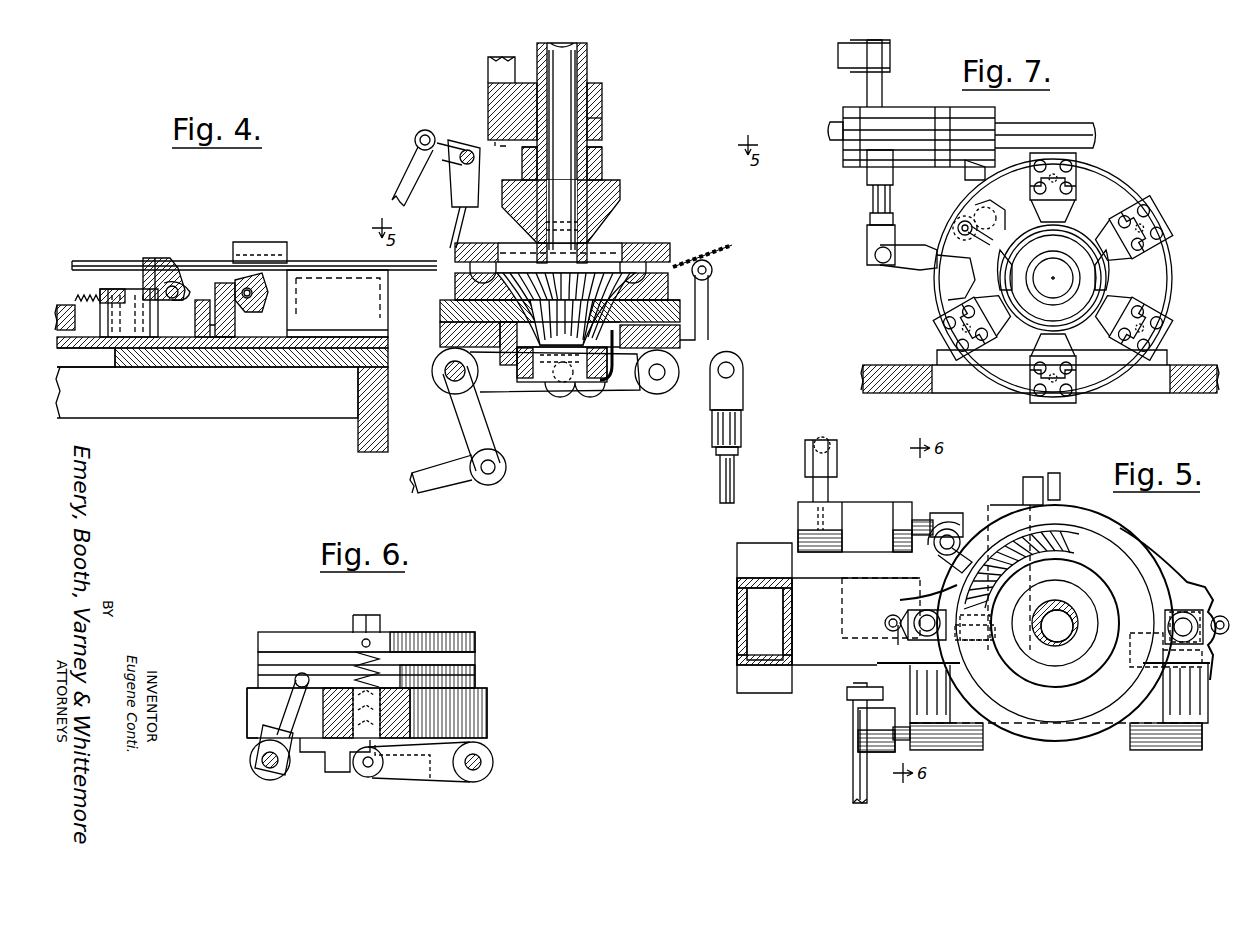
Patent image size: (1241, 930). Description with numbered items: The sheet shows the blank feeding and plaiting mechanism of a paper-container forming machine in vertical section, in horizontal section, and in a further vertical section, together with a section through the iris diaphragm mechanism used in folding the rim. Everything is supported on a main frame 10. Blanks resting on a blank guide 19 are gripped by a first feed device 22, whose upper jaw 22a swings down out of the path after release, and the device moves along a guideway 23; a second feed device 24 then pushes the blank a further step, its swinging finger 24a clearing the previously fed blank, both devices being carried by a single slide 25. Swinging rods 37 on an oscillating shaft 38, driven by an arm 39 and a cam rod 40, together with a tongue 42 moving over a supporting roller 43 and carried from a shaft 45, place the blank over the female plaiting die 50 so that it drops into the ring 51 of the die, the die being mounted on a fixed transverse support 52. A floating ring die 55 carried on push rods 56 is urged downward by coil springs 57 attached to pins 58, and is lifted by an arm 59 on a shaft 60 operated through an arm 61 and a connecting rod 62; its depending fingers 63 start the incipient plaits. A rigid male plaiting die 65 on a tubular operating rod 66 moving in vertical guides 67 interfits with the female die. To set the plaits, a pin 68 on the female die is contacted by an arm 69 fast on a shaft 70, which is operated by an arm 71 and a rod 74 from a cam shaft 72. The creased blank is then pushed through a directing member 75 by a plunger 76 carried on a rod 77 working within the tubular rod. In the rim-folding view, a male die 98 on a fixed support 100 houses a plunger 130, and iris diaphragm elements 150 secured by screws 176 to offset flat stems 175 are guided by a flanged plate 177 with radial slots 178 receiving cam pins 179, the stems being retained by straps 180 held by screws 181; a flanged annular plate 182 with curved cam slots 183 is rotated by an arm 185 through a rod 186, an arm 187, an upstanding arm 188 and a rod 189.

In FIG. 4, the main frame 10 is at (358, 450).
In FIG. 5, the main frame 10 is at (737, 637).
In FIG. 4, the blank guide 19 is at (105, 258).
In FIG. 4, the first feed device 22 is at (183, 266).
In FIG. 4, the upper jaw 22a is at (155, 256).
In FIG. 4, the guideway 23 is at (287, 352).
In FIG. 4, the second feed device 24 is at (222, 283).
In FIG. 4, the swinging finger 24a is at (262, 272).
In FIG. 4, the slide 25 is at (176, 360).
In FIG. 4, the swinging rods 37 is at (452, 232).
In FIG. 4, the oscillating shaft 38 is at (466, 148).
In FIG. 4, the arm 39 is at (438, 132).
In FIG. 4, the cam rod 40 is at (400, 175).
In FIG. 4, the tongue 42 is at (732, 250).
In FIG. 4, the supporting roller 43 is at (713, 270).
In FIG. 5, the shaft 45 is at (1060, 488).
In FIG. 4, the female plaiting die 50 is at (680, 305).
In FIG. 5, the female plaiting die 50 is at (1050, 555).
In FIG. 6, the female plaiting die 50 is at (475, 680).
In FIG. 4, the ring 51 is at (670, 280).
In FIG. 5, the ring 51 is at (1078, 527).
In FIG. 6, the ring 51 is at (475, 665).
In FIG. 4, the transverse support 52 is at (680, 330).
In FIG. 5, the transverse support 52 is at (845, 660).
In FIG. 6, the transverse support 52 is at (487, 725).
In FIG. 4, the floating ring die 55 is at (650, 243).
In FIG. 5, the floating ring die 55 is at (1125, 560).
In FIG. 6, the floating ring die 55 is at (475, 638).
In FIG. 4, the push rods 56 is at (613, 258).
In FIG. 5, the push rods 56 is at (945, 620).
In FIG. 6, the push rods 56 is at (353, 648).
In FIG. 5, the coil springs 57 is at (893, 615).
In FIG. 6, the coil springs 57 is at (380, 665).
In FIG. 5, the pins 58 is at (910, 635).
In FIG. 6, the pins 58 is at (370, 640).
In FIG. 4, the arm 59 is at (510, 380).
In FIG. 5, the arm 59 is at (960, 672).
In FIG. 6, the arm 59 is at (450, 775).
In FIG. 4, the shaft 60 is at (480, 400).
In FIG. 5, the shaft 60 is at (993, 745).
In FIG. 6, the shaft 60 is at (493, 762).
In FIG. 4, the arm 61 is at (500, 452).
In FIG. 5, the arm 61 is at (865, 700).
In FIG. 4, the connecting rod 62 is at (470, 482).
In FIG. 5, the connecting rod 62 is at (853, 770).
In FIG. 4, the depending fingers 63 is at (670, 253).
In FIG. 4, the male plaiting die 65 is at (620, 192).
In FIG. 5, the male plaiting die 65 is at (1095, 585).
In FIG. 4, the tubular operating rod 66 is at (588, 72).
In FIG. 5, the tubular operating rod 66 is at (1068, 635).
In FIG. 4, the vertical guides 67 is at (602, 108).
In FIG. 5, the pin 68 is at (985, 520).
In FIG. 6, the pin 68 is at (302, 673).
In FIG. 5, the arm 69 is at (950, 540).
In FIG. 6, the arm 69 is at (290, 698).
In FIG. 4, the shaft 70 is at (660, 380).
In FIG. 5, the shaft 70 is at (922, 520).
In FIG. 6, the shaft 70 is at (255, 752).
In FIG. 4, the arm 71 is at (725, 355).
In FIG. 5, the arm 71 is at (828, 492).
In FIG. 5, the cam shaft 72 is at (830, 460).
In FIG. 4, the rod 74 is at (735, 470).
In FIG. 4, the directing member 75 is at (607, 385).
In FIG. 6, the directing member 75 is at (335, 772).
In FIG. 4, the plunger 76 is at (602, 162).
In FIG. 4, the rod 77 is at (602, 130).
In FIG. 5, the rod 77 is at (1058, 640).
In FIG. 7, the male die 98 is at (1072, 255).
In FIG. 7, the fixed support 100 is at (920, 393).
In FIG. 7, the plunger 130 is at (1100, 272).
In FIG. 7, the iris diaphragm elements 150 is at (995, 272).
In FIG. 7, the offset flat stems 175 is at (945, 328).
In FIG. 7, the screws 176 is at (1130, 290).
In FIG. 7, the flanged plate 177 is at (1030, 180).
In FIG. 7, the radial slots 178 is at (990, 235).
In FIG. 7, the cam pins 179 is at (958, 224).
In FIG. 7, the straps 180 is at (1078, 168).
In FIG. 7, the screws 181 is at (1095, 190).
In FIG. 7, the flanged annular plate 182 is at (945, 295).
In FIG. 7, the curved cam slots 183 is at (978, 207).
In FIG. 7, the arm 185 is at (915, 270).
In FIG. 7, the rod 186 is at (873, 200).
In FIG. 7, the arm 187 is at (878, 130).
In FIG. 7, the upstanding arm 188 is at (883, 75).
In FIG. 7, the rod 189 is at (845, 70).